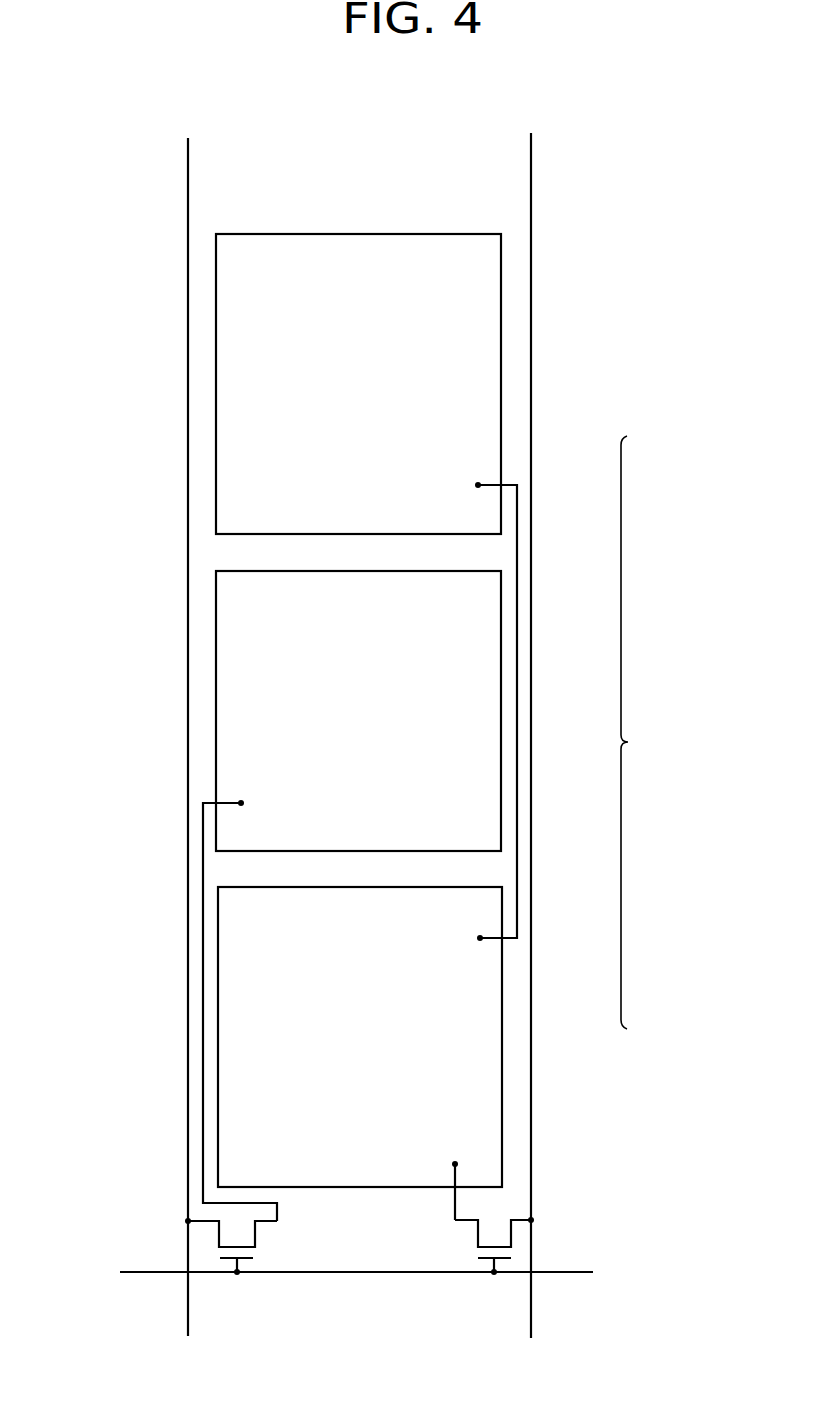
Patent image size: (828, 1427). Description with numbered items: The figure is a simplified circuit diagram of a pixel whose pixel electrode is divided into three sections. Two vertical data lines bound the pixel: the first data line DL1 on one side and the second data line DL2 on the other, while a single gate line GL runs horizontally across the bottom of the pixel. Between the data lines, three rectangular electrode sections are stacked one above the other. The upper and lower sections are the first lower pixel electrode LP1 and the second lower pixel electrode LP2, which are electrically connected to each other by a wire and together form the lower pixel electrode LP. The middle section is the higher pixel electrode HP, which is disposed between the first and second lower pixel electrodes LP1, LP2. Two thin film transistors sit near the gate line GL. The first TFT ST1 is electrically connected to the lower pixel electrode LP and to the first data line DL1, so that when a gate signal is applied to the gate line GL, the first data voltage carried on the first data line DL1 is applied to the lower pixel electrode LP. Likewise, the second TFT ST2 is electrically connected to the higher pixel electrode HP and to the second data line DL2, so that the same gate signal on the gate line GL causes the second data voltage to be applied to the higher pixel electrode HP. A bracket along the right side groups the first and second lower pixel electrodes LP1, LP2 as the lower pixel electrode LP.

The first data line DL1 is at (535, 1309).
The second data line DL2 is at (187, 1307).
The gate line GL is at (575, 1270).
The first lower pixel electrode LP1 is at (485, 443).
The second lower pixel electrode LP2 is at (487, 1025).
The lower pixel electrode LP is at (637, 732).
The higher pixel electrode HP is at (233, 692).
The first TFT ST1 is at (455, 1234).
The second TFT ST2 is at (268, 1234).